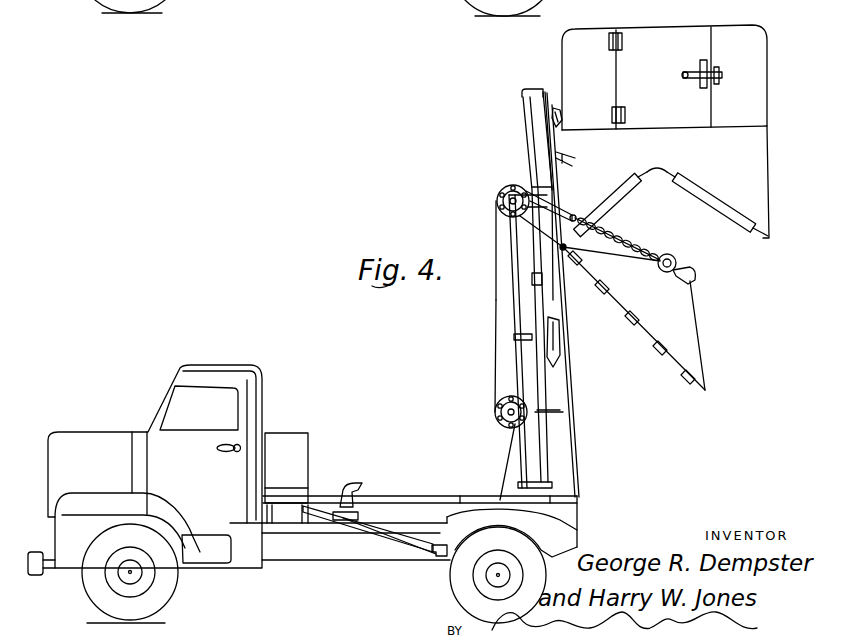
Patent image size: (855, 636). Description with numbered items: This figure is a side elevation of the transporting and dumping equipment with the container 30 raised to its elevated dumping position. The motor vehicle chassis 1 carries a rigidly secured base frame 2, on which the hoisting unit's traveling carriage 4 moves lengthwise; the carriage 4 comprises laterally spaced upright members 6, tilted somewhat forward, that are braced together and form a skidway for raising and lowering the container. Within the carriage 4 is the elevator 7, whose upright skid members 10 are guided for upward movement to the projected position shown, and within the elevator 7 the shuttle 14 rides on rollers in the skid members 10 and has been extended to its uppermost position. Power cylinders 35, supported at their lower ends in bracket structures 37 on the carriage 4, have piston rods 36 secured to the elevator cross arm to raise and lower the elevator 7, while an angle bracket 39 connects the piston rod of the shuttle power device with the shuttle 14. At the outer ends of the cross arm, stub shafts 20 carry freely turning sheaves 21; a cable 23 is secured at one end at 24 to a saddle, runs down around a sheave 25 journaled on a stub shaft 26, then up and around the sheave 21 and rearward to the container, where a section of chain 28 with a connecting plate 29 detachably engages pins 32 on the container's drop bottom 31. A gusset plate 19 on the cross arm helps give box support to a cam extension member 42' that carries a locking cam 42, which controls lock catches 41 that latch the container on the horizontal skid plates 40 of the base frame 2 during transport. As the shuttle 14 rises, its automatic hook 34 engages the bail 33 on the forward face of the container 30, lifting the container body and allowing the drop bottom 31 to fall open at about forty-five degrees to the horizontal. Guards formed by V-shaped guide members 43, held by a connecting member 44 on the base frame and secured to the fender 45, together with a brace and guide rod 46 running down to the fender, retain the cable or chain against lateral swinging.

The chassis 1 is at (273, 566).
The base frame 2 is at (320, 518).
The carriage 4 is at (505, 472).
The upright members 6 is at (560, 395).
The elevator 7 is at (520, 230).
The upright skid members 10 is at (568, 425).
The shuttle 14 is at (535, 137).
The gusset plate 19 is at (533, 170).
The stub shafts 20 is at (498, 203).
The sheaves 21 is at (503, 193).
The cable 23 is at (497, 335).
The cable end securing point 24 is at (512, 223).
The sheave 25 is at (497, 408).
The stub shaft 26 is at (495, 417).
The chain 28 is at (617, 237).
The connecting plate 29 is at (667, 257).
The container 30 is at (727, 30).
The drop bottom 31 is at (672, 350).
The pins 32 is at (687, 270).
The bail 33 is at (563, 125).
The hook 34 is at (547, 122).
The power cylinders 35 is at (540, 430).
The piston rods 36 is at (528, 253).
The bracket structures 37 is at (577, 488).
The angle bracket 39 is at (522, 100).
The skid plates 40 is at (408, 497).
The lock catches 41 is at (347, 488).
The locking cams 42 is at (575, 342).
The cam extension member 42' is at (500, 302).
The guide members 43 is at (430, 515).
The connecting member 44 is at (298, 506).
The fender 45 is at (447, 557).
The brace and guide rod 46 is at (390, 533).